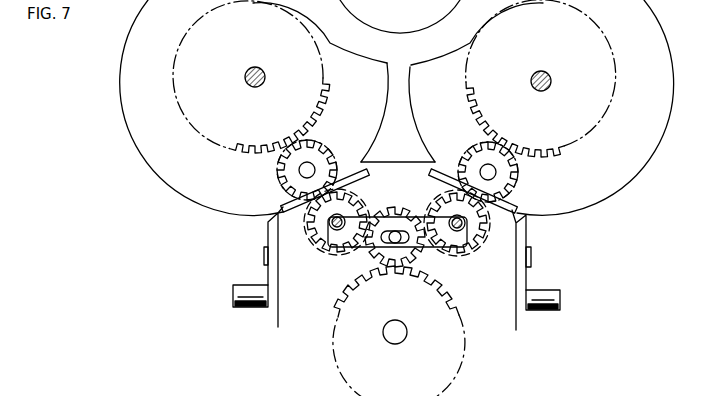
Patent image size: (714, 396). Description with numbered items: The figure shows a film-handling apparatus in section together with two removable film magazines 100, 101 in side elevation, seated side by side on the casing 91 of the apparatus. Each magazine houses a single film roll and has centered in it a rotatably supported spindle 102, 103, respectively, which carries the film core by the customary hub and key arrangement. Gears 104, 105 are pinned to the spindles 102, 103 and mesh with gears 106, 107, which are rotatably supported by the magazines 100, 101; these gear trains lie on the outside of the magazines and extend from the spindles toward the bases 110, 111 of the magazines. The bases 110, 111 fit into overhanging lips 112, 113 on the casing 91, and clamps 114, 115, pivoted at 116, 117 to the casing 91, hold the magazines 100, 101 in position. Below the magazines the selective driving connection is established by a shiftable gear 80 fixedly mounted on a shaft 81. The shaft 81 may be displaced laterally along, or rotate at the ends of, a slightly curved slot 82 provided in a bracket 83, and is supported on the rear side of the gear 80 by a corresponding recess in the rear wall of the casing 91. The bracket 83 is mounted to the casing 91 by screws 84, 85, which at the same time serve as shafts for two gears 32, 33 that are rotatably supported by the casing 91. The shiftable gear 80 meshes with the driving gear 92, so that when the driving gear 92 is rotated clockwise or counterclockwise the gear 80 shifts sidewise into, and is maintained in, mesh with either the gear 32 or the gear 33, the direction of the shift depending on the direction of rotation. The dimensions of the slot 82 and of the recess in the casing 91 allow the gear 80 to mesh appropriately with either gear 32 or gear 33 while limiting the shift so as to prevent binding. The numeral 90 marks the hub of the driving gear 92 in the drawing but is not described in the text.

The removable film magazine 100 is at (635, 27).
The removable film magazine 101 is at (187, 20).
The spindle 102 is at (546, 90).
The spindle 103 is at (250, 86).
The gear 104 is at (560, 156).
The gear 105 is at (238, 148).
The gear 106 is at (518, 168).
The gear 107 is at (280, 161).
The base 110 is at (497, 214).
The base 111 is at (358, 172).
The overhanging lip 112 is at (432, 163).
The overhanging lip 113 is at (365, 163).
The clamp 114 is at (527, 235).
The clamp 115 is at (268, 234).
The pivot 116 is at (531, 258).
The pivot 117 is at (264, 258).
The shiftable gear 80 is at (410, 217).
The shaft 81 is at (410, 237).
The slot 82 is at (383, 237).
The bracket 83 is at (358, 250).
The screw 84 is at (458, 232).
The screw 85 is at (330, 238).
The gear 32 is at (477, 248).
The gear 33 is at (307, 238).
The drive shaft 90 is at (403, 340).
The casing 91 is at (277, 320).
The driving gear 92 is at (447, 282).